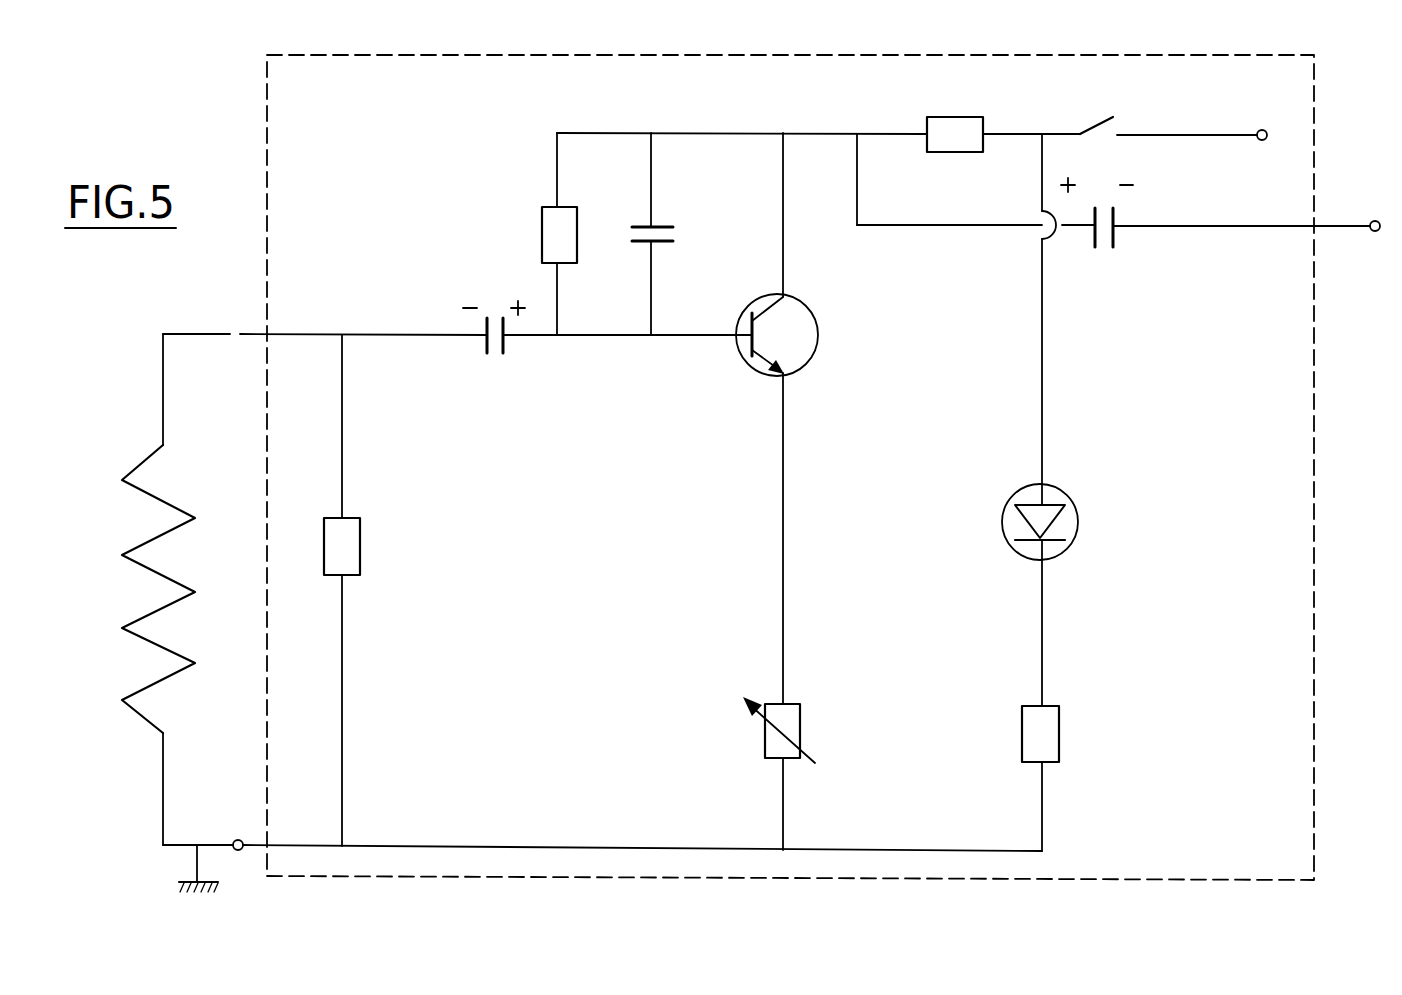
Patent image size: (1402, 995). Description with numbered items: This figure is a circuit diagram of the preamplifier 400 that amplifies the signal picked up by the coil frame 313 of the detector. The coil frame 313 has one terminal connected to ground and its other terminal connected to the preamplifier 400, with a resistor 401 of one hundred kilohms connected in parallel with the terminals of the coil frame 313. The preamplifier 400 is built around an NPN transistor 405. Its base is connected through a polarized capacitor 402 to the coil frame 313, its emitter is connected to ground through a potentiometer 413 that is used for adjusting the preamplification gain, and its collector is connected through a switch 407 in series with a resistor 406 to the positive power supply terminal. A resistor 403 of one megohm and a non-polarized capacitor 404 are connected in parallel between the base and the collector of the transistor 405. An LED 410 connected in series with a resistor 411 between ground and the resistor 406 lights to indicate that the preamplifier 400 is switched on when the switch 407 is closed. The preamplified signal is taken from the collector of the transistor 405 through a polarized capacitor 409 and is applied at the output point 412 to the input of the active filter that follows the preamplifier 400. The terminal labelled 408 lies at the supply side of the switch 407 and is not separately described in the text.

The coil frame 313 is at (130, 440).
The preamplifier 400 is at (258, 152).
The resistor 401 is at (352, 555).
The polarized capacitor 402 is at (516, 350).
The resistor 403 is at (547, 235).
The non-polarized capacitor 404 is at (638, 215).
The transistor 405 is at (800, 345).
The resistor 406 is at (950, 133).
The switch 407 is at (1086, 117).
The terminal 408 is at (1259, 142).
The polarized capacitor 409 is at (1124, 242).
The LED 410 is at (1072, 525).
The resistor 411 is at (1050, 733).
The output point 412 is at (1375, 232).
The potentiometer 413 is at (792, 723).